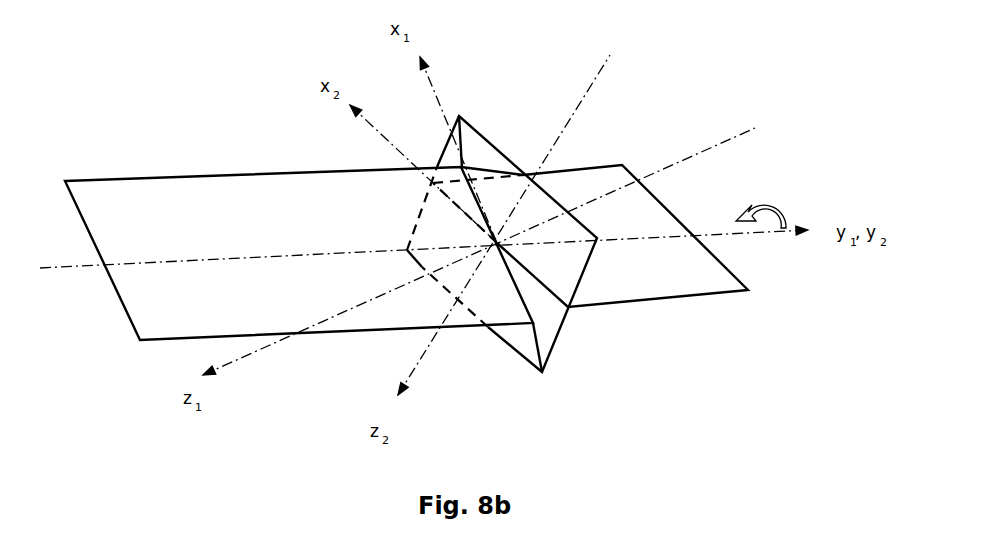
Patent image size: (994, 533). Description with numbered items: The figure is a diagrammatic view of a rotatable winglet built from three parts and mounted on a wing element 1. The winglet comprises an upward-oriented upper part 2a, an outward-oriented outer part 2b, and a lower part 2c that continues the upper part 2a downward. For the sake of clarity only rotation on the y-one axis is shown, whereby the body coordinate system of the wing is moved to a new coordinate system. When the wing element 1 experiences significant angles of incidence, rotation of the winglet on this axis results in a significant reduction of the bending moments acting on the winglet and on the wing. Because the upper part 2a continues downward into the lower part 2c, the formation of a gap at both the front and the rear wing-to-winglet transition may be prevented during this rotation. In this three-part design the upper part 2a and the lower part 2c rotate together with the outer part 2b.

The wing element 1 is at (143, 160).
The upper part 2a is at (560, 275).
The outer part 2b is at (737, 288).
The lower part 2c is at (532, 345).